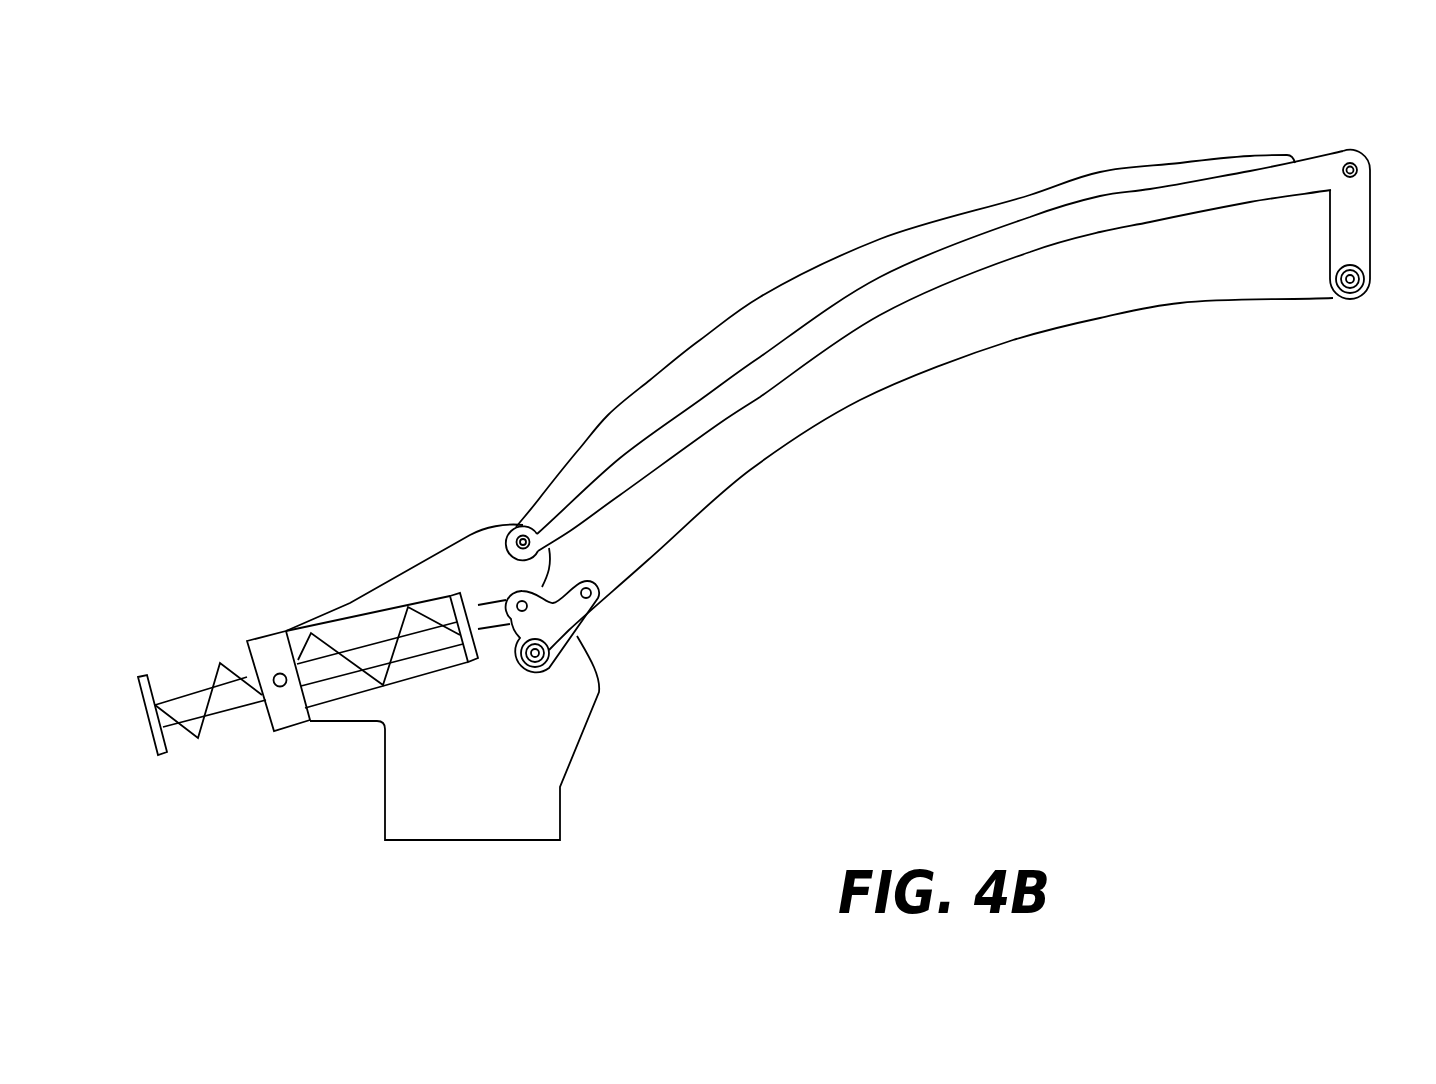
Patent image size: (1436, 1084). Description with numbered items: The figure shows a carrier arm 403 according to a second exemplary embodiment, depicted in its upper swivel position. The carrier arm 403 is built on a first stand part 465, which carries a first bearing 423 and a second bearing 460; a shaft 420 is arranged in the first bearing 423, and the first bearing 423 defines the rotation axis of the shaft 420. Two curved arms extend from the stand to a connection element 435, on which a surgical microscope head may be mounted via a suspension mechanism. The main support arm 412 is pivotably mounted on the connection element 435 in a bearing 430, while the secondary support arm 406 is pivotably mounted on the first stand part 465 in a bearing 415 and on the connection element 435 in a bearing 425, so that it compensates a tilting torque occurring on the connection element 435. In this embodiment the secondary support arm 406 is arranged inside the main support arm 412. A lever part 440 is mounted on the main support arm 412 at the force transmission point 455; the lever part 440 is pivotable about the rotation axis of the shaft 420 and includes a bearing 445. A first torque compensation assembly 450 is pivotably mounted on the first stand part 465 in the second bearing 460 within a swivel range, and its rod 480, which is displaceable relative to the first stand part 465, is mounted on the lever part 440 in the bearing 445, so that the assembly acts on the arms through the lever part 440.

The carrier arm 403 is at (641, 249).
The secondary support arm 406 is at (913, 277).
The main support arm 412 is at (787, 432).
The bearing 415 is at (550, 528).
The shaft 420 is at (575, 660).
The first bearing 423 is at (536, 676).
The bearing 425 is at (1366, 154).
The bearing 430 is at (1362, 300).
The connection element 435 is at (1358, 223).
The lever part 440 is at (572, 627).
The bearing 445 is at (516, 591).
The first torque compensation assembly 450 is at (366, 618).
The force transmission point 455 is at (595, 583).
The second bearing 460 is at (284, 686).
The first stand part 465 is at (384, 810).
The rod 480 is at (479, 600).